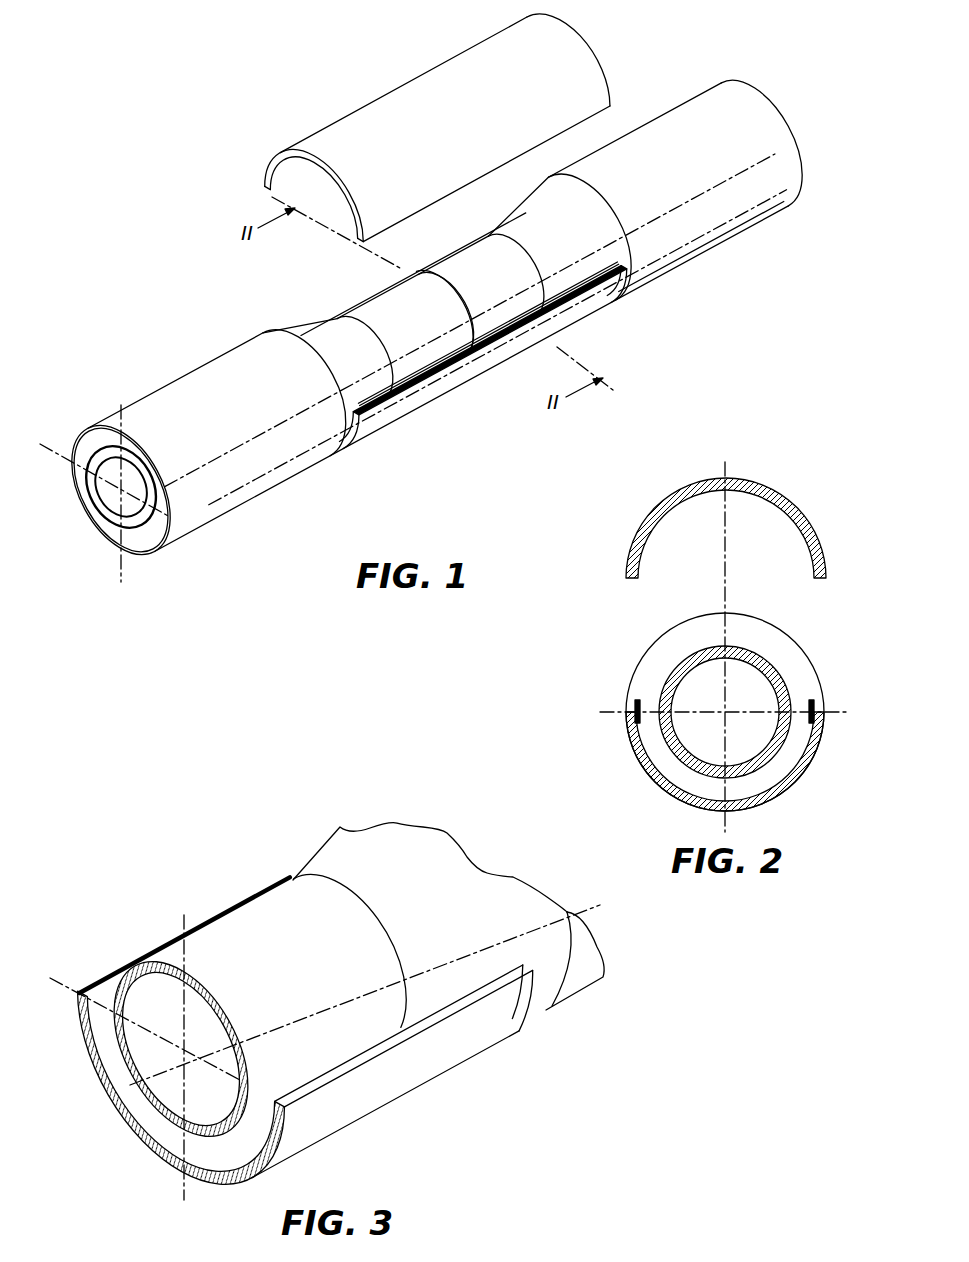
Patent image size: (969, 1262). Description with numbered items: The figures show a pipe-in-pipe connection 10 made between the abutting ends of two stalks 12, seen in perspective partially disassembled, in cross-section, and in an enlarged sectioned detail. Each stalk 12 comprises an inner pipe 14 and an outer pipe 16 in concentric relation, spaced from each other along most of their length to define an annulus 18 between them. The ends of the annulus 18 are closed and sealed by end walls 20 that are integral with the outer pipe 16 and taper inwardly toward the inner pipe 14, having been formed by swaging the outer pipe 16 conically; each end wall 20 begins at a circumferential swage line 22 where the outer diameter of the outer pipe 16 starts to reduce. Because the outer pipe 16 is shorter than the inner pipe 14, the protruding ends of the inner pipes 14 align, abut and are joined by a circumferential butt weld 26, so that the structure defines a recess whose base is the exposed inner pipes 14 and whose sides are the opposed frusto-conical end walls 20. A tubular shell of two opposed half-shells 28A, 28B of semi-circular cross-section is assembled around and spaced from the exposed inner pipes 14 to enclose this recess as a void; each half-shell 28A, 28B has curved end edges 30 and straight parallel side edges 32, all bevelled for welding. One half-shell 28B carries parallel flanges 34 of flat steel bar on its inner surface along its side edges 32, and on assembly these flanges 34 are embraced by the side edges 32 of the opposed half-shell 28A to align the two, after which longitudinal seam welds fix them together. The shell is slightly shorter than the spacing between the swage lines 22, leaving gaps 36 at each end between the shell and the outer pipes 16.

In FIG. 1, the connection 10 is at (247, 89).
In FIG. 1, the PiP stalk 12 is at (436, 318).
In FIG. 1, the inner pipe 14 is at (446, 310).
In FIG. 2, the inner pipe 14 is at (678, 663).
In FIG. 3, the inner pipe 14 is at (181, 1049).
In FIG. 1, the outer pipe 16 is at (404, 256).
In FIG. 3, the outer pipe 16 is at (583, 980).
In FIG. 1, the annulus 18 is at (120, 487).
In FIG. 1, the end wall 20 is at (457, 307).
In FIG. 2, the end wall 20 is at (782, 640).
In FIG. 3, the end wall 20 is at (427, 832).
In FIG. 1, the swage line 22 is at (411, 265).
In FIG. 3, the swage line 22 is at (362, 945).
In FIG. 1, the butt weld 26 is at (450, 306).
In FIG. 1, the half-shell 28A is at (449, 128).
In FIG. 2, the half-shell 28A is at (672, 493).
In FIG. 1, the half-shell 28B is at (461, 315).
In FIG. 2, the half-shell 28B is at (797, 782).
In FIG. 3, the half-shell 28B is at (385, 1104).
In FIG. 1, the curved end edge 30 is at (313, 201).
In FIG. 3, the curved end edge 30 is at (182, 1075).
In FIG. 1, the side edge 32 is at (488, 333).
In FIG. 3, the side edge 32 is at (184, 935).
In FIG. 1, the flange 34 is at (489, 340).
In FIG. 2, the flange 34 is at (626, 706).
In FIG. 3, the flange 34 is at (404, 1036).
In FIG. 1, the gap 36 is at (483, 356).
In FIG. 3, the gap 36 is at (523, 996).